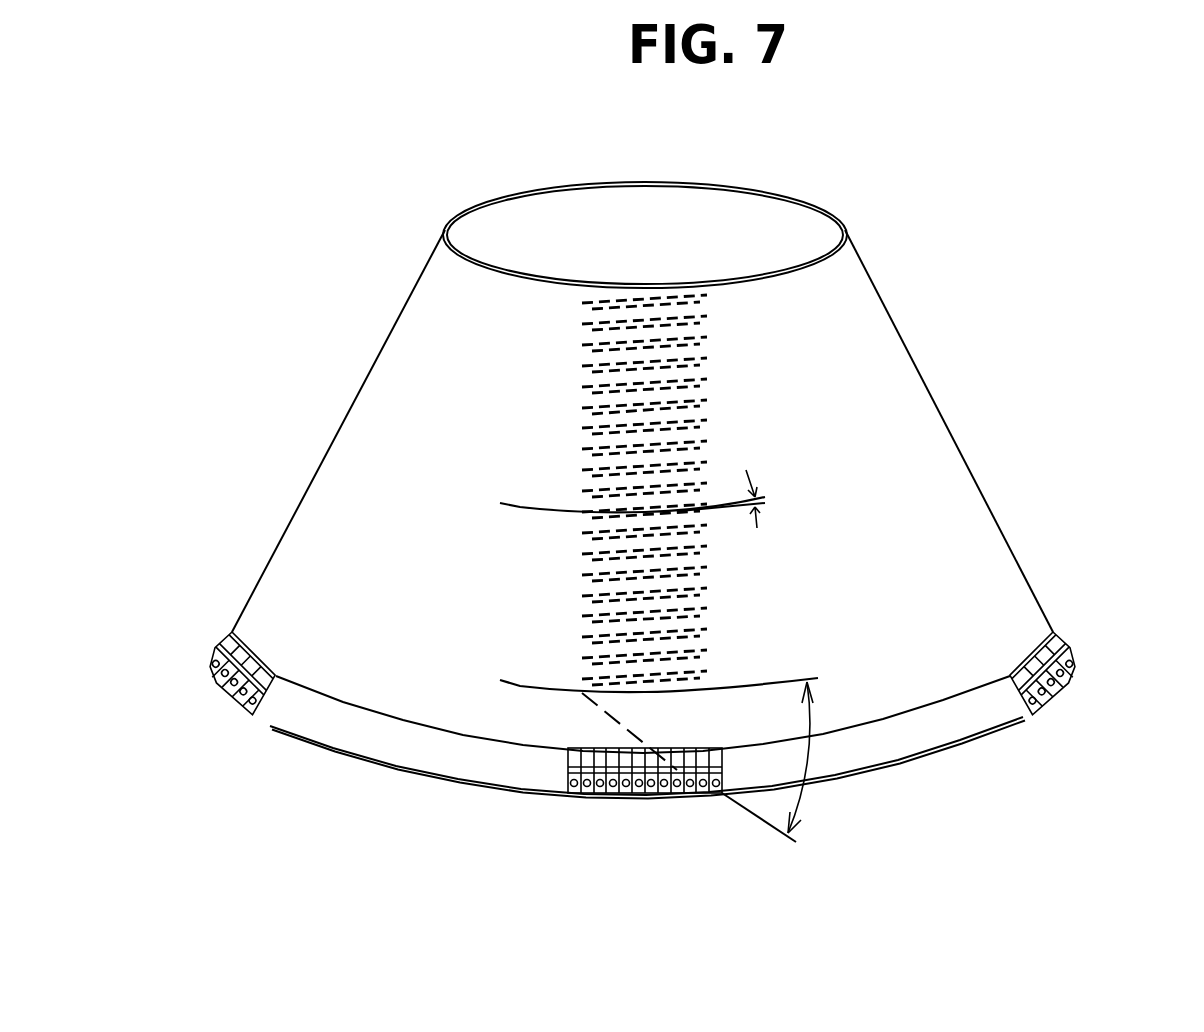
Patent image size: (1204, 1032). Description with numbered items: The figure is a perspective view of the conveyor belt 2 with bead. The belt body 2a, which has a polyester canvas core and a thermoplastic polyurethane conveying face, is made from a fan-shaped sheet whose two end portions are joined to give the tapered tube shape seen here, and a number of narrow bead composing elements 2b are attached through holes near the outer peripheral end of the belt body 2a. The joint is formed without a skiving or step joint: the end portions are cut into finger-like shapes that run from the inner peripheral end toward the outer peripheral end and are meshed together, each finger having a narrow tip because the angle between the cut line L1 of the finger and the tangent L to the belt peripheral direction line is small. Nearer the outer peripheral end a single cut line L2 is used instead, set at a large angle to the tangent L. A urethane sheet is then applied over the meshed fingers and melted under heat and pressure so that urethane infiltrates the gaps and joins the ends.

The conveyor belt 2 is at (688, 490).
The belt body 2a is at (938, 473).
The bead composing elements 2b is at (669, 666).
The tangent to the belt peripheral direction line L is at (500, 680).
The cut line of the finger L1 is at (762, 492).
The single cut line L2 is at (757, 817).